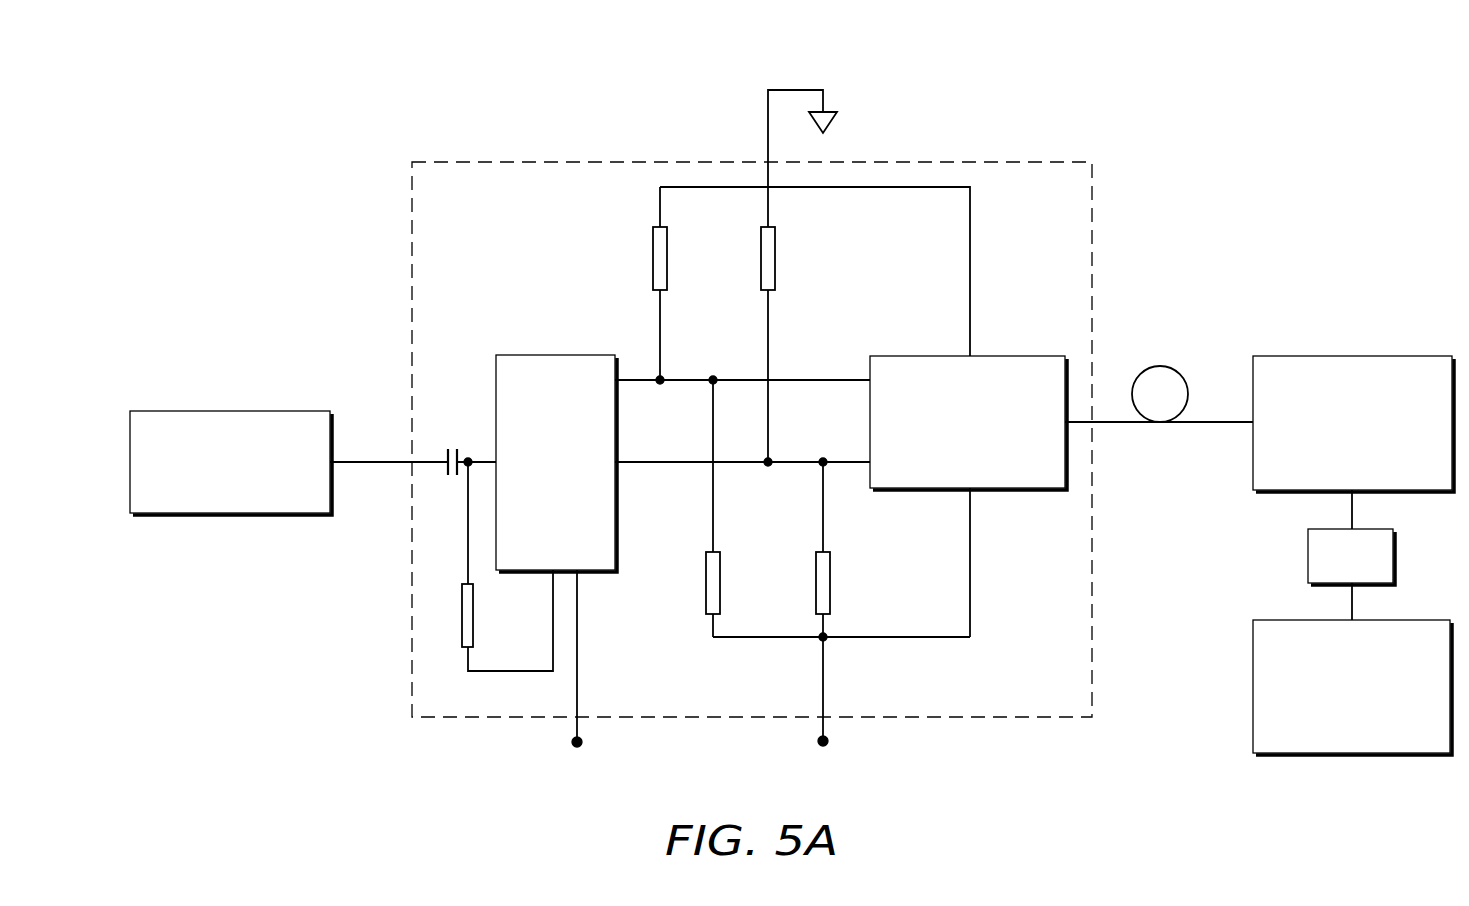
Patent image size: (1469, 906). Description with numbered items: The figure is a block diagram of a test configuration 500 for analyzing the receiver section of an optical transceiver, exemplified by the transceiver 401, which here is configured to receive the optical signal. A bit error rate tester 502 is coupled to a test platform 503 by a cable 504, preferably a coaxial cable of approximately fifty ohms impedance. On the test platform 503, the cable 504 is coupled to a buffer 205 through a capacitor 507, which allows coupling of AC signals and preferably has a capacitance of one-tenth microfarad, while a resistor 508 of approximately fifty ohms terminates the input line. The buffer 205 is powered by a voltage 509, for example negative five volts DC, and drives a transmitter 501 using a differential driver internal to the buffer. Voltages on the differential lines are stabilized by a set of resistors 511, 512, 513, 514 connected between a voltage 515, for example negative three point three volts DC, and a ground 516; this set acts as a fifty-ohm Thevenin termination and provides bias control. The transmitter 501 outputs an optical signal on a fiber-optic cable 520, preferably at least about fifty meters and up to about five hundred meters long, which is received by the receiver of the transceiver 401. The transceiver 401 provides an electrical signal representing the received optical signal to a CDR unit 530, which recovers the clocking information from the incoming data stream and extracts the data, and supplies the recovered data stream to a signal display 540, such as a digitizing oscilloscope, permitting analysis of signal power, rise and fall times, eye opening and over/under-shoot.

The test configuration 500 is at (300, 104).
The test platform 503 is at (497, 161).
The bit error rate tester 502 is at (228, 410).
The cable 504 is at (383, 463).
The capacitor 507 is at (451, 447).
The buffer 205 is at (552, 354).
The resistor 508 is at (474, 622).
The voltage 509 is at (573, 748).
The resistor 511 is at (652, 256).
The resistor 513 is at (760, 250).
The ground 516 is at (834, 122).
The resistor 512 is at (705, 590).
The resistor 514 is at (815, 567).
The voltage 515 is at (819, 746).
The transmitter 501 is at (920, 355).
The fiber-optic cable 520 is at (1162, 366).
The transceiver 401 is at (1390, 355).
The CDR unit 530 is at (1306, 568).
The signal display 540 is at (1382, 620).